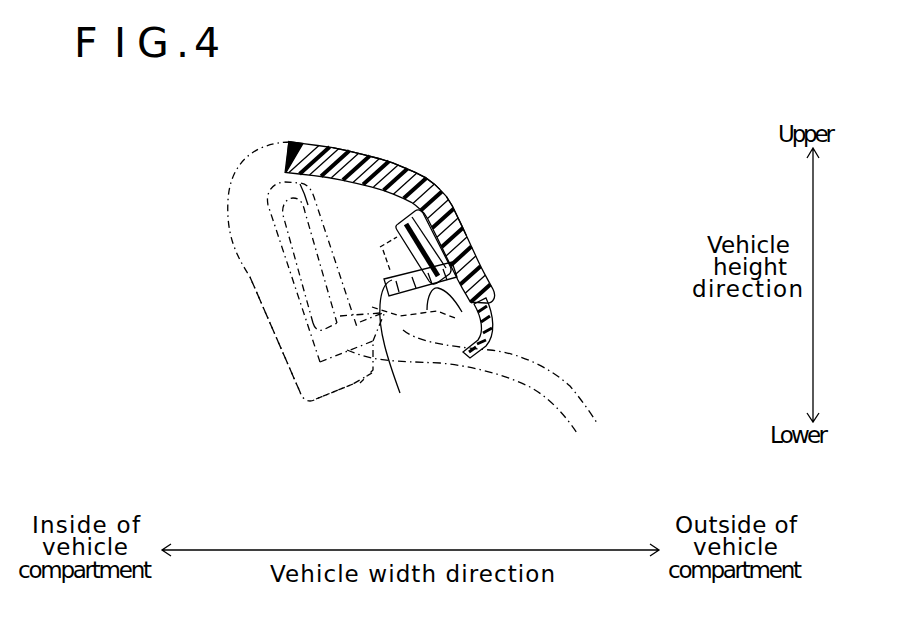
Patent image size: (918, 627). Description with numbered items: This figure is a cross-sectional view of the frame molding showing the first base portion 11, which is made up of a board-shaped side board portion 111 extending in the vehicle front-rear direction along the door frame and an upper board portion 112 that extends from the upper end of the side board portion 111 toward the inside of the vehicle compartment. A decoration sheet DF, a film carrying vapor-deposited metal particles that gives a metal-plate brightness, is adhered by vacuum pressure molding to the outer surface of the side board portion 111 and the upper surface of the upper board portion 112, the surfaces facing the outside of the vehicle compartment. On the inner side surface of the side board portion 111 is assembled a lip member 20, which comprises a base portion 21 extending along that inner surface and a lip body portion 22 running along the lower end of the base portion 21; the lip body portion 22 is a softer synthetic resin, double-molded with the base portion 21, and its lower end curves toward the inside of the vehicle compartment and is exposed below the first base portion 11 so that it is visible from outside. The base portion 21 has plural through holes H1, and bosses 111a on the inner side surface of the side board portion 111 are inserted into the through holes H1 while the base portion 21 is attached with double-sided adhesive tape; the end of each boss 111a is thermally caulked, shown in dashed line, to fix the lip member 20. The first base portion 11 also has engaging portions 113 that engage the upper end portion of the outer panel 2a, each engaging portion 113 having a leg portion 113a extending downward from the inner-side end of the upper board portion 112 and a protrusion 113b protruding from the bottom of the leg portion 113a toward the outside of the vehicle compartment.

The first base portion 11 is at (341, 190).
The side board portion 111 is at (448, 217).
The boss 111a is at (407, 351).
The upper board portion 112 is at (373, 158).
The engaging portion 113 is at (292, 383).
The leg portion 113a is at (270, 318).
The protrusion 113b is at (355, 395).
The lip member 20 is at (463, 284).
The base portion 21 is at (390, 277).
The lip body portion 22 is at (493, 337).
The outer panel 2a is at (580, 393).
The decoration sheet DF is at (441, 177).
The through hole H1 is at (427, 310).